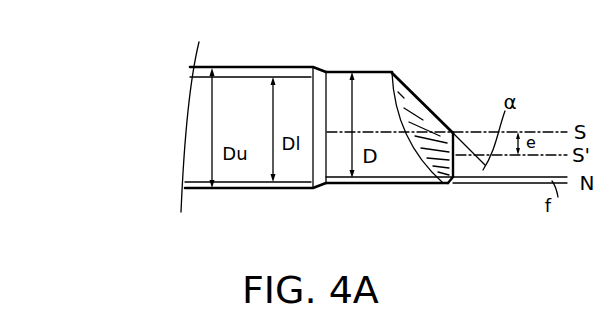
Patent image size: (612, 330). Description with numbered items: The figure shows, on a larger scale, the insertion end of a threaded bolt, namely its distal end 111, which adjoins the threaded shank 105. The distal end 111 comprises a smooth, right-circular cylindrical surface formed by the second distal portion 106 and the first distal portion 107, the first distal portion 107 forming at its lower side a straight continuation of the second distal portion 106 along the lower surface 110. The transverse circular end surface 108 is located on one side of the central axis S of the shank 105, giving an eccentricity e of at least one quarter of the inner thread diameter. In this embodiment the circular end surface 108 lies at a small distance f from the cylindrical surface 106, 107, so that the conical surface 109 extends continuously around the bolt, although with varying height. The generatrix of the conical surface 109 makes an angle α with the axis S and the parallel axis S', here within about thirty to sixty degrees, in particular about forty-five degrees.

The shank 105 is at (253, 136).
The second distal portion 106 is at (382, 222).
The first distal portion 107 is at (382, 222).
The circular end surface 108 is at (455, 172).
The conical surface 109 is at (437, 117).
The surface 110 is at (405, 178).
The distal end 111 is at (427, 40).